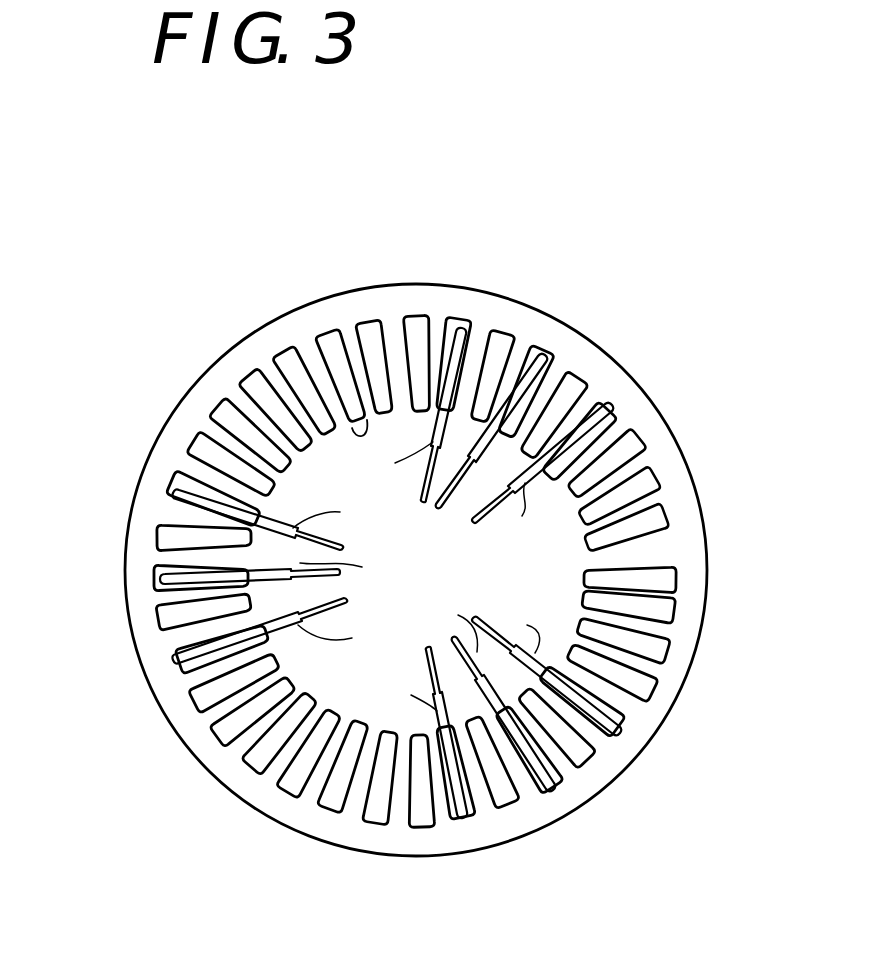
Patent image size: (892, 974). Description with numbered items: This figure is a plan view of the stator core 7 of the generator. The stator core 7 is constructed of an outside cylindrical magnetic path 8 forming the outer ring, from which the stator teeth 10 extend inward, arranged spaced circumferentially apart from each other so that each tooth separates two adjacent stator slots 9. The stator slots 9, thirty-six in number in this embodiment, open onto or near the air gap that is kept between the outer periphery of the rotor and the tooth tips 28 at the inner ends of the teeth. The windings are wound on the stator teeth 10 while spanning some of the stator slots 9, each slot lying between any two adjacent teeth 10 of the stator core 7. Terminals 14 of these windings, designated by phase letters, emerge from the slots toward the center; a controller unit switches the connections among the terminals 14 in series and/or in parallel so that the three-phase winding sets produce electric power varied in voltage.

The stator core 7 is at (710, 512).
The outside cylindrical magnetic path 8 is at (680, 654).
The stator slots 9 is at (580, 753).
The stator teeth 10 is at (363, 780).
The terminals 14 is at (605, 402).
The tooth tips 28 is at (367, 420).